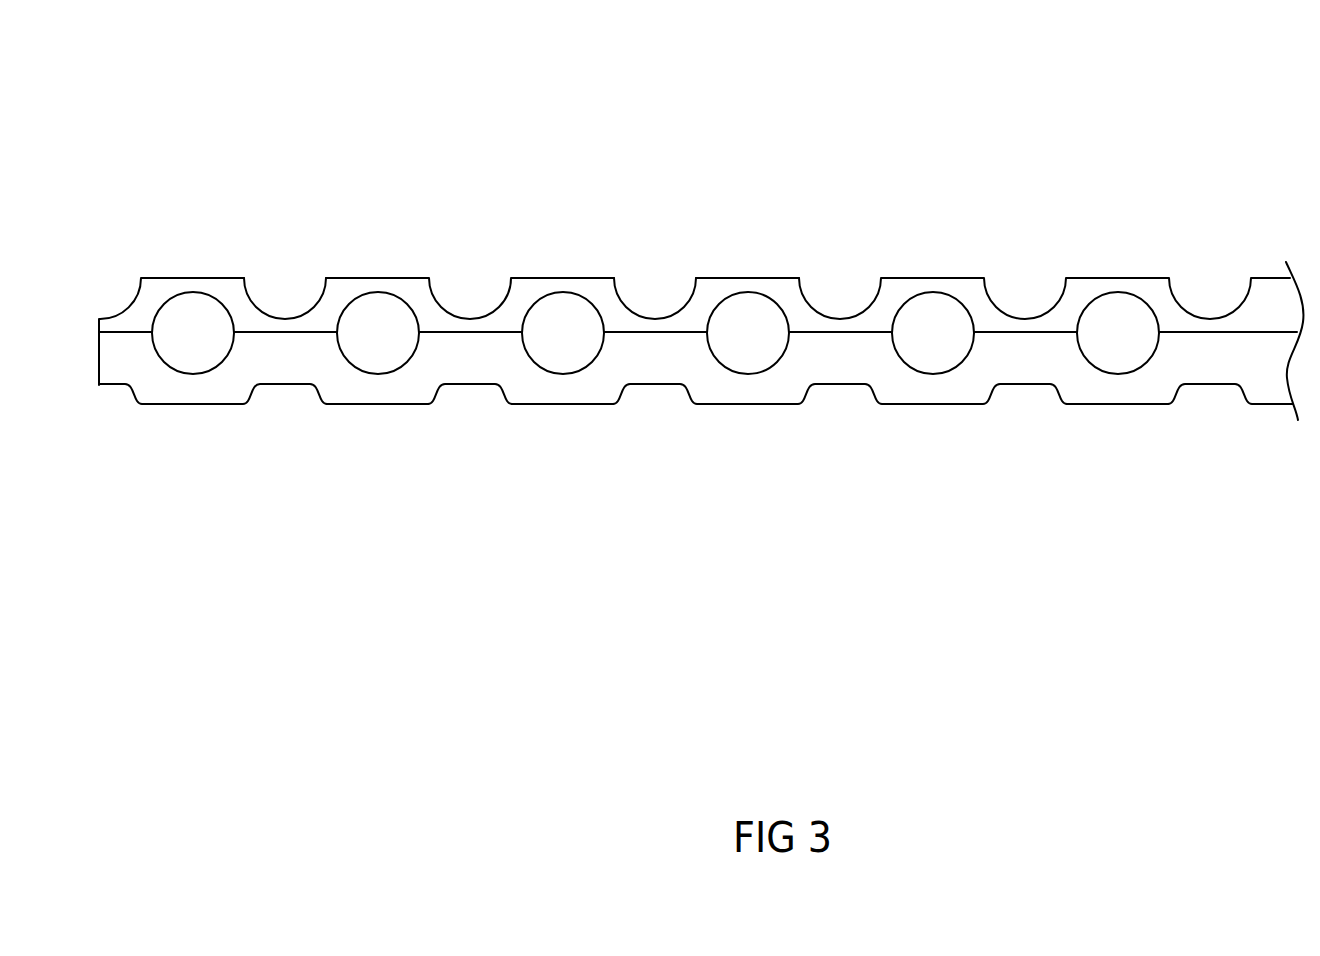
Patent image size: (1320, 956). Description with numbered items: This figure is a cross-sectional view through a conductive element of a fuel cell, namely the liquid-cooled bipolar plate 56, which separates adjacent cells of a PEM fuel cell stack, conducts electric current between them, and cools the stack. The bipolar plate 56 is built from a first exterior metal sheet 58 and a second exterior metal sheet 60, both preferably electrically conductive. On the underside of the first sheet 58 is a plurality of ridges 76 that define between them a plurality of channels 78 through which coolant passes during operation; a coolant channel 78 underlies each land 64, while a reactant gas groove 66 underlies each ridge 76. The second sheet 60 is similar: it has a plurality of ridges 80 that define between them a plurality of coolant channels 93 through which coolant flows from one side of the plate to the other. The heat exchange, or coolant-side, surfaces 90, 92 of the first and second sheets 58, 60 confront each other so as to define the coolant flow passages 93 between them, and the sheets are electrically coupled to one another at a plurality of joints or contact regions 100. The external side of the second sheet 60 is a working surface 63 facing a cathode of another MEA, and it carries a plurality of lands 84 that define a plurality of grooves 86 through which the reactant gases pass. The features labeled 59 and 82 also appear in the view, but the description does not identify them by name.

The bipolar plate 56 is at (150, 197).
The first exterior metal sheet 58 is at (1268, 297).
The upper recess 59 is at (323, 271).
The second exterior metal sheet 60 is at (1213, 372).
The working surface 63 is at (567, 411).
The land 64 is at (750, 291).
The reactant gas groove 66 is at (656, 320).
The ridge 76 is at (490, 332).
The channel 78 is at (565, 333).
The ridge 80 is at (1028, 330).
The circular opening 82 is at (373, 330).
The land 84 is at (410, 405).
The groove 86 is at (373, 371).
The heat exchange surface 90 is at (1131, 301).
The heat exchange surface 92 is at (1131, 367).
The coolant flow passage 93 is at (935, 357).
The contact region 100 is at (841, 350).